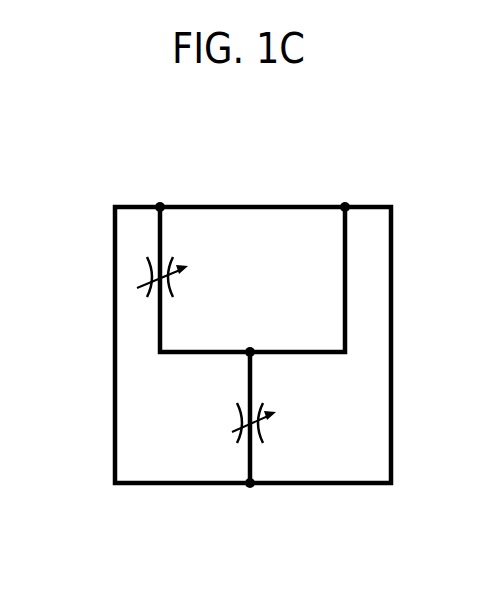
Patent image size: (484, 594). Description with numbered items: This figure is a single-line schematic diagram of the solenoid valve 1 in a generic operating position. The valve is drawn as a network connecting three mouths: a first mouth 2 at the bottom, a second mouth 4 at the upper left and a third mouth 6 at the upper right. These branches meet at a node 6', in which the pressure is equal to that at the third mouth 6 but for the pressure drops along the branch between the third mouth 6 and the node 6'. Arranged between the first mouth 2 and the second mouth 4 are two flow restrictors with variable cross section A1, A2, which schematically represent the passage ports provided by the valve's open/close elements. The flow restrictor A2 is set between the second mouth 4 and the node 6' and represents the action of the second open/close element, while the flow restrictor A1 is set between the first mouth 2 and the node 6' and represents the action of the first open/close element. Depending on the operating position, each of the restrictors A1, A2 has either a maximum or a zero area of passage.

The solenoid valve 1 is at (206, 170).
The first mouth 2 is at (250, 498).
The second mouth 4 is at (160, 195).
The third mouth 6 is at (345, 195).
The node 6' is at (254, 312).
The flow restrictor with variable cross section A1 is at (263, 432).
The flow restrictor with variable cross section A2 is at (147, 272).